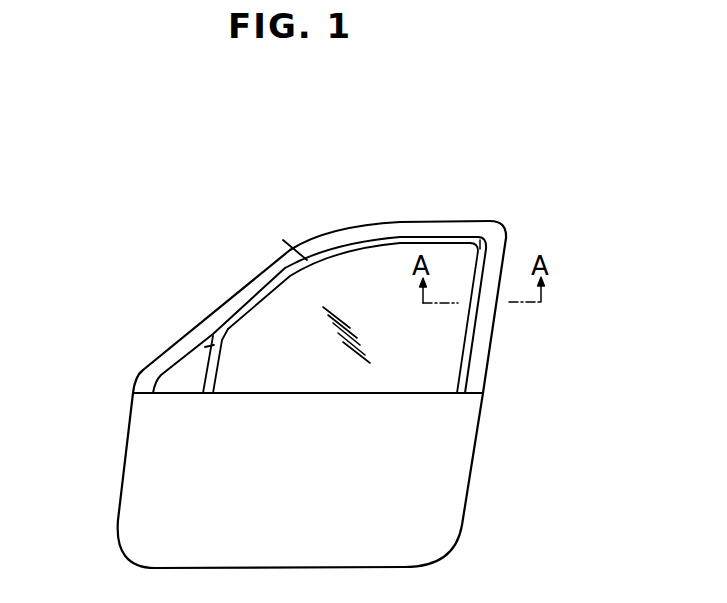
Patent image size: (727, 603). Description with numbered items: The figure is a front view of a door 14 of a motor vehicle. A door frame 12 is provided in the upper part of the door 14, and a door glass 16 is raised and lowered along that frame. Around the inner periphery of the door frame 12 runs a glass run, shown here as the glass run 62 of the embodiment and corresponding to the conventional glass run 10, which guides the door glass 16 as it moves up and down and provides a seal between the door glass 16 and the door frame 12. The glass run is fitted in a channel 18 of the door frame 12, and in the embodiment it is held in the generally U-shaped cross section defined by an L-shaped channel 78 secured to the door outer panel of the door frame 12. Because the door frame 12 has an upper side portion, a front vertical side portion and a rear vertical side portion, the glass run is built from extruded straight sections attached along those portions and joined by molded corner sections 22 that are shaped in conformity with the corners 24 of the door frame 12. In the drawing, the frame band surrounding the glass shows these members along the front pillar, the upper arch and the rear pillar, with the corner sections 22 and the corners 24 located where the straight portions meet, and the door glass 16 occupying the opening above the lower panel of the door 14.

The glass run 10 is at (319, 185).
The door frame 12 is at (339, 282).
The vehicle door 14 is at (448, 485).
The door glass 16 is at (428, 355).
The channel 18 is at (199, 218).
The corner sections 22 is at (215, 333).
The corners 24 is at (218, 322).
The glass run 62 is at (398, 232).
The channel 78 is at (284, 240).